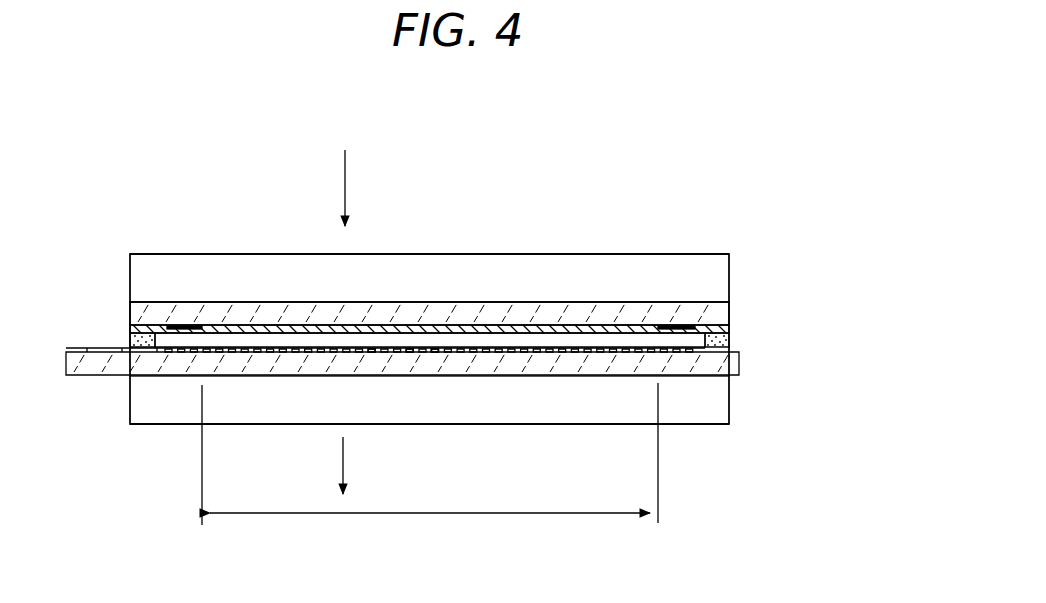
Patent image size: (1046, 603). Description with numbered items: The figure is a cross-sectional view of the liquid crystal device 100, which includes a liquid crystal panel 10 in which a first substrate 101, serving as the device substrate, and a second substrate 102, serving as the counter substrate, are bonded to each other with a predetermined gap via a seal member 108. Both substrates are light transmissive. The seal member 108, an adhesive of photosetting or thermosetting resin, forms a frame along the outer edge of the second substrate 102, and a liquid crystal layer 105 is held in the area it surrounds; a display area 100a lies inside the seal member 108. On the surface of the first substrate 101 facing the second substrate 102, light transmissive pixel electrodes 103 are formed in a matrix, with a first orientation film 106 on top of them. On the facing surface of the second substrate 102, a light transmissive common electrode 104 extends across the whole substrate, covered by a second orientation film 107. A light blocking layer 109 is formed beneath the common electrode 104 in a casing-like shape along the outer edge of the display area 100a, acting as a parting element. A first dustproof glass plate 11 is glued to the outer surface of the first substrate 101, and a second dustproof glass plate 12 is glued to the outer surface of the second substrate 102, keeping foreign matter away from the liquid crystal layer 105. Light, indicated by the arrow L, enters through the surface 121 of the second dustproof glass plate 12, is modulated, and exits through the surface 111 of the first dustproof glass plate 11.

The liquid crystal panel 10 is at (734, 312).
The first dustproof glass plate 11 is at (175, 397).
The second dustproof glass plate 12 is at (172, 283).
The liquid crystal device 100 is at (564, 159).
The display area 100a is at (430, 468).
The first substrate 101 is at (599, 370).
The second substrate 102 is at (701, 302).
The pixel electrodes 103 is at (370, 353).
The common electrode 104 is at (370, 330).
The liquid crystal layer 105 is at (501, 346).
The first orientation film 106 is at (477, 347).
The second orientation film 107 is at (537, 337).
The seal member 108 is at (728, 343).
The light blocking layer 109 is at (178, 326).
The surface of the first dustproof glass plate 111 is at (262, 425).
The surface of the second dustproof glass plate 121 is at (283, 254).
The arrow indicating light L is at (353, 319).